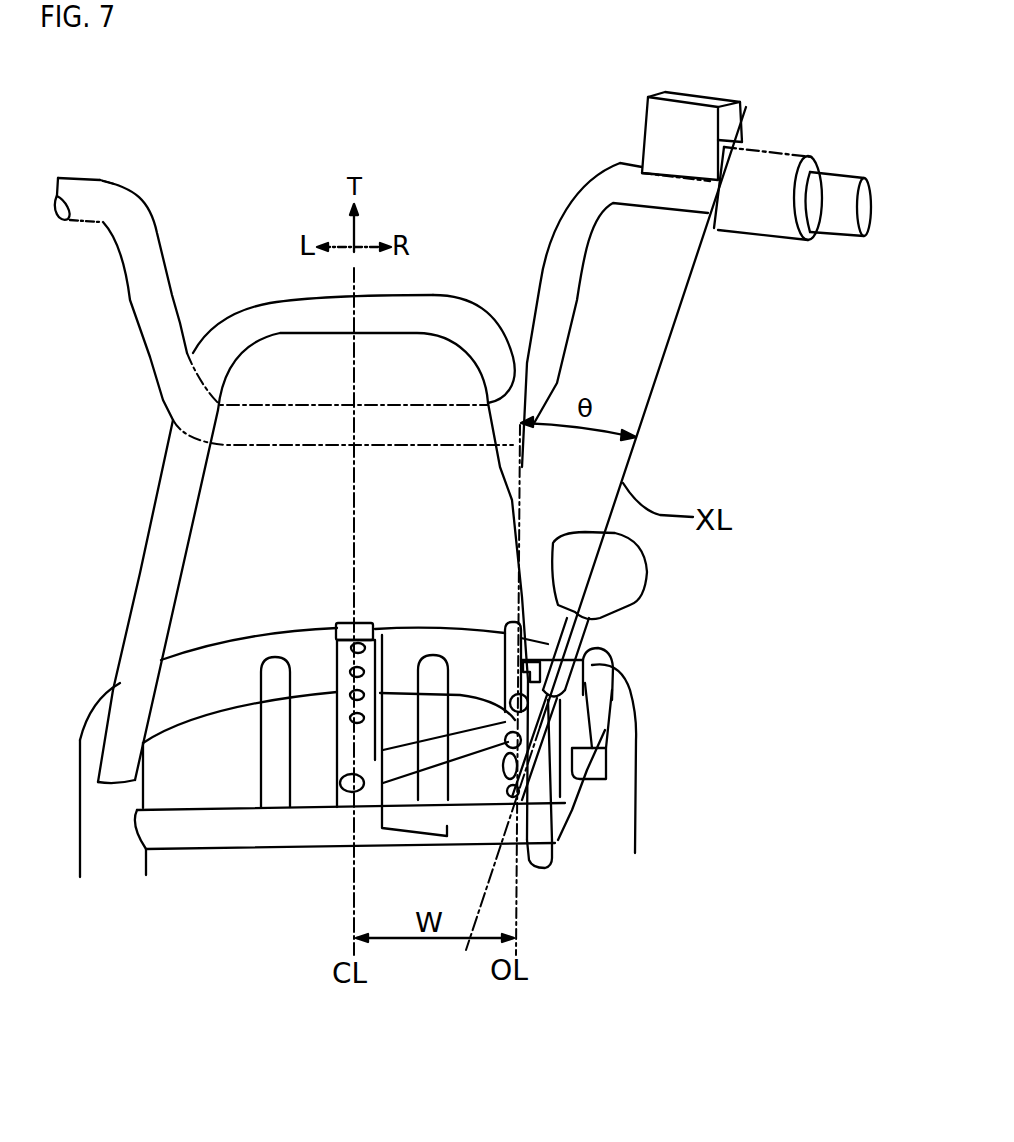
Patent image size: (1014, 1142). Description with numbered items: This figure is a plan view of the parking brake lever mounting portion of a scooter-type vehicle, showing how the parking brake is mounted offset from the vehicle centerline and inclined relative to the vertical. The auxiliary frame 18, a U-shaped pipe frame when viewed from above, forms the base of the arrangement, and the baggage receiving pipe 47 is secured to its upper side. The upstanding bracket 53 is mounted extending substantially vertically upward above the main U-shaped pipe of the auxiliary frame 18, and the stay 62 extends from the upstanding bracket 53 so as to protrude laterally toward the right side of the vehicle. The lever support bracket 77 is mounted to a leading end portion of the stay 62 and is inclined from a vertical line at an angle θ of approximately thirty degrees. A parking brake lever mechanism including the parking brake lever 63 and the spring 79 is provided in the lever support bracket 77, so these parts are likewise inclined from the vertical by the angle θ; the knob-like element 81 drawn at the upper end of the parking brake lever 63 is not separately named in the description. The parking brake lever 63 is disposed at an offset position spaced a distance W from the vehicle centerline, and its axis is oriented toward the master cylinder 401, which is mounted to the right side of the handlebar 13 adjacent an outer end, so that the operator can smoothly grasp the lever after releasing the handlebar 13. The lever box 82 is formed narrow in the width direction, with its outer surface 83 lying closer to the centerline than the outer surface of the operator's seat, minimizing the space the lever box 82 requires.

The handlebar 13 is at (572, 180).
The master cylinder 401 is at (653, 123).
The baggage receiving pipe 47 is at (523, 340).
The auxiliary frame 18 is at (243, 837).
The upstanding bracket 53 is at (327, 793).
The stay 62 is at (470, 752).
The knob 81 is at (632, 580).
The spring 79 is at (513, 713).
The parking brake lever 63 is at (583, 640).
The lever box 82 is at (613, 673).
The outer surface 83 is at (590, 760).
The lever support bracket 77 is at (553, 850).